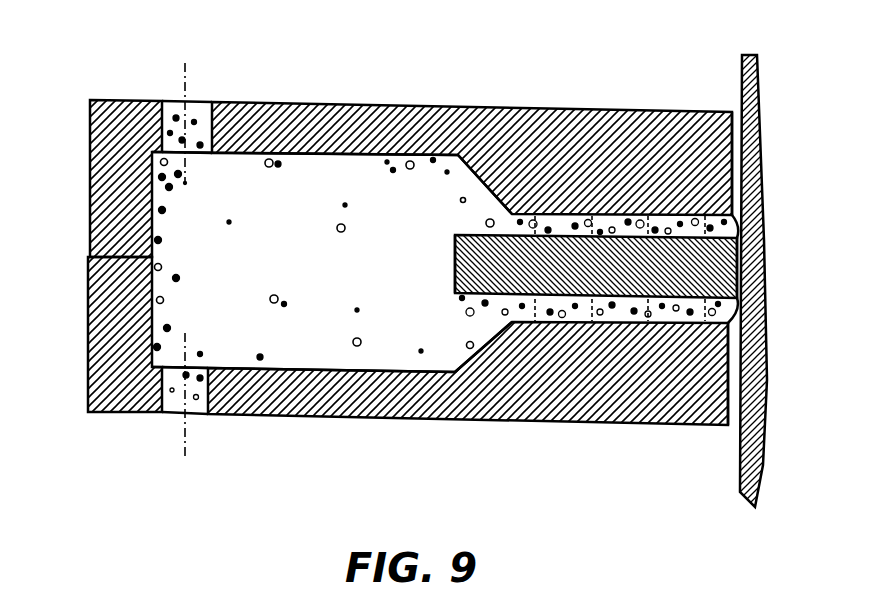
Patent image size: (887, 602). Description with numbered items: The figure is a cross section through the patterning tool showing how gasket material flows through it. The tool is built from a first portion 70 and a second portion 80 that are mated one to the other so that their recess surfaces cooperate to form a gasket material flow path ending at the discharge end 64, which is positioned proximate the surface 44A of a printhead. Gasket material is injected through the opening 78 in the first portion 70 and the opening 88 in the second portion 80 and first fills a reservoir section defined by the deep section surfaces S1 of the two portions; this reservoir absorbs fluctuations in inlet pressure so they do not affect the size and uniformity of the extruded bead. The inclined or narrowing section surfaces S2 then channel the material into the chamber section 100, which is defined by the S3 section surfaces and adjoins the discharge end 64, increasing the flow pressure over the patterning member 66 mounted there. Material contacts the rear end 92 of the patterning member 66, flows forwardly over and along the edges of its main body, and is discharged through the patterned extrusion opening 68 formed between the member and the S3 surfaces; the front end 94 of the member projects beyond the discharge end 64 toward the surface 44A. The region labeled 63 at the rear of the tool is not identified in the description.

The surface of a printhead 44A is at (738, 472).
The rear wall 63 is at (89, 257).
The discharge end 64 is at (731, 156).
The patterning member 66 is at (455, 275).
The patterned extrusion opening 68 is at (738, 216).
The first portion 70 is at (475, 425).
The opening 78 is at (193, 413).
The second portion 80 is at (477, 108).
The opening 88 is at (205, 110).
The rear end of the patterning member 92 is at (455, 260).
The front end of the patterning member 94 is at (748, 265).
The chamber section 100 is at (556, 212).
The deep section surfaces S1 is at (301, 157).
The inclined or narrowing section surfaces S2 is at (477, 183).
The S3 section surfaces S3 is at (634, 214).